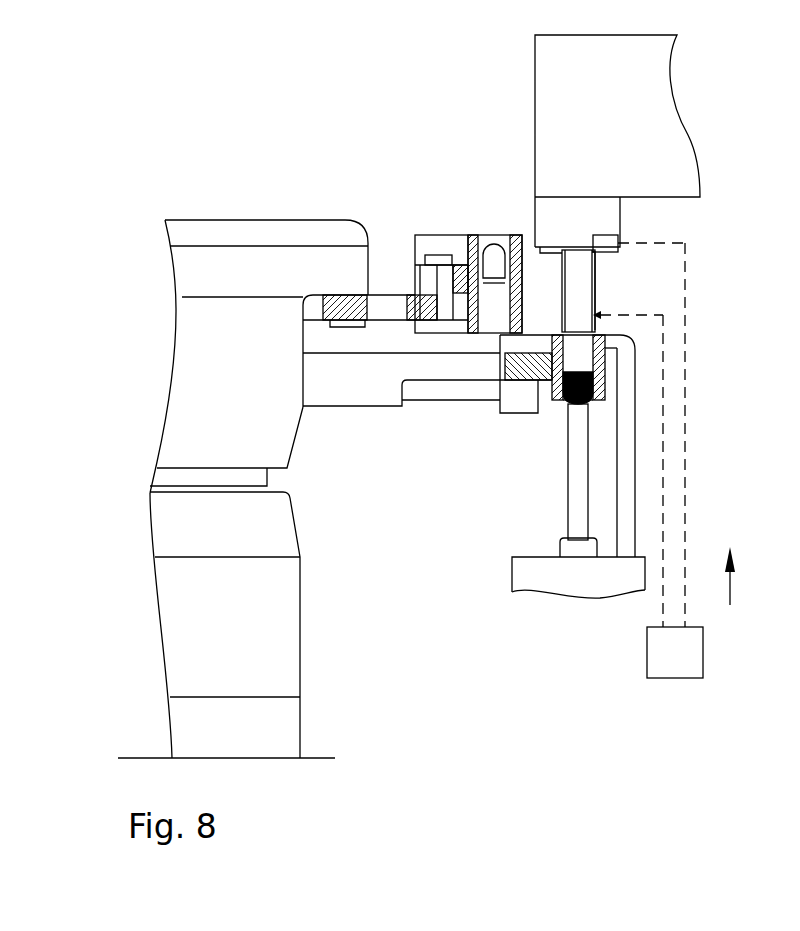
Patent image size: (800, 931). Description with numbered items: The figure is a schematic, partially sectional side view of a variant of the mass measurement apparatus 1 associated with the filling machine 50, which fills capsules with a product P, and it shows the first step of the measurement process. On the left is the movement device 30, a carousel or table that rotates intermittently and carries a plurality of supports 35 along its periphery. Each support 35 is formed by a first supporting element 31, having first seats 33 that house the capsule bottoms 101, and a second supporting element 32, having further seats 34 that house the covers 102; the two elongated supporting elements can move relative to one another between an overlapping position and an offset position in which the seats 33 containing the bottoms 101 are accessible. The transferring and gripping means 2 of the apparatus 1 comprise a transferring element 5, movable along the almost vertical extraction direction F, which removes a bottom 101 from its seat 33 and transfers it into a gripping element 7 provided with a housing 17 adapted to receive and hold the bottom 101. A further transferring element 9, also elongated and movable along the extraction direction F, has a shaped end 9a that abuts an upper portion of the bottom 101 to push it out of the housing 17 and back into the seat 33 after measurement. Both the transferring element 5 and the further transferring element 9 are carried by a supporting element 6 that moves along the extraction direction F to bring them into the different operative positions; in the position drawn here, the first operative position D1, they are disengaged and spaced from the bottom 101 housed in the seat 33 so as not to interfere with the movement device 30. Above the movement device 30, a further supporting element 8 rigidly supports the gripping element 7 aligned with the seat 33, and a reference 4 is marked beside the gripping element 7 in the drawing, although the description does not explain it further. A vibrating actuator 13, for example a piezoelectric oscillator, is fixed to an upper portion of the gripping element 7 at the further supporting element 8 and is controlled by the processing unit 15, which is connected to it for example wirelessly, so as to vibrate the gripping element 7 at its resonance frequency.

The mass measurement apparatus 1 is at (470, 725).
The transferring and gripping means 2 is at (525, 540).
The reference position 4 is at (600, 310).
The transferring element 5 is at (568, 514).
The supporting element 6 is at (597, 582).
The gripping element 7 is at (597, 288).
The further supporting element 8 is at (577, 210).
The further transferring element 9 is at (627, 500).
The shaped end 9a is at (563, 355).
The vibrating actuator 13 is at (608, 235).
The processing unit 15 is at (653, 675).
The housing 17 is at (600, 290).
The movement device 30 is at (230, 265).
The first supporting element 31 is at (323, 260).
The second supporting element 32 is at (382, 310).
The first seat 33 is at (575, 370).
The further seat 34 is at (507, 273).
The support 35 is at (333, 440).
The filling machine 50 is at (221, 417).
The bottom 101 is at (580, 405).
The cover 102 is at (495, 253).
The product P is at (577, 400).
The first operative position D1 is at (482, 622).
The extraction direction F is at (742, 576).